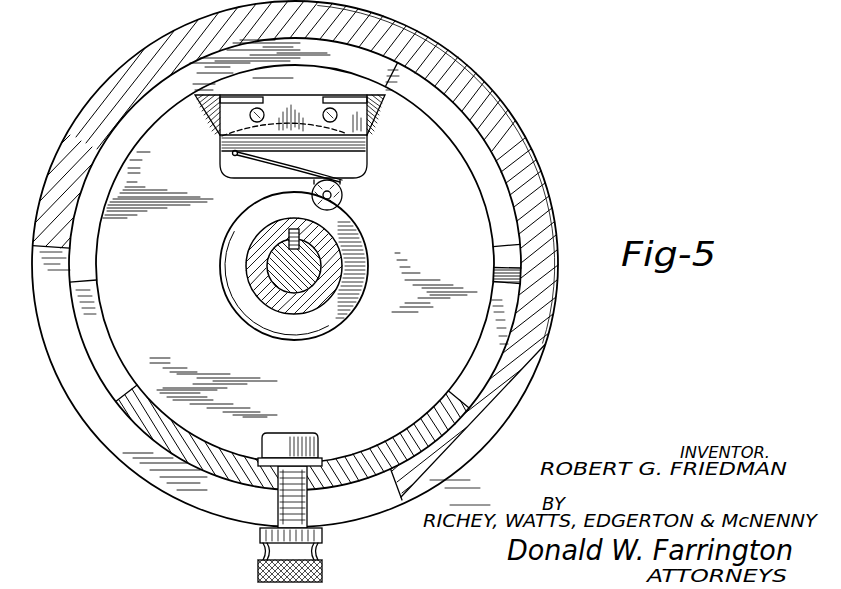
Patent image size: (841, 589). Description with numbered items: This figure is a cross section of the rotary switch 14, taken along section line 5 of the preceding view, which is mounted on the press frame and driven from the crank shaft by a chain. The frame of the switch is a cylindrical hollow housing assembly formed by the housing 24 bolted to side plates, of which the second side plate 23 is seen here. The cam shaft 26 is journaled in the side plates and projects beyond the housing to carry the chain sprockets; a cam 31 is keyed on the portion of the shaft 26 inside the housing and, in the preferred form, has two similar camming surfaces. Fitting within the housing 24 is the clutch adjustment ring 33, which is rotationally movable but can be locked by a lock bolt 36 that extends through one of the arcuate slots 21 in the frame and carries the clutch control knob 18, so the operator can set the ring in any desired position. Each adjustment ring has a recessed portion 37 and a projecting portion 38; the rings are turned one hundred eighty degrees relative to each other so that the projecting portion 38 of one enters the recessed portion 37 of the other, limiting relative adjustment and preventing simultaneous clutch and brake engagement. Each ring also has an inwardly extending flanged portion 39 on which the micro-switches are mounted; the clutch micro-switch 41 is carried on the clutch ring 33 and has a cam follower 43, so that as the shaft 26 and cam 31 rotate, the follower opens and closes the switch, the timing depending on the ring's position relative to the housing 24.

The section line 5 is at (415, 0).
The rotary switch 14 is at (553, 211).
The clutch control knob 18 is at (313, 553).
The arcuate slots 21 is at (370, 497).
The second side plate 23 is at (193, 417).
The housing 24 is at (527, 323).
The cam shaft 26 is at (283, 273).
The cam 31 is at (317, 317).
The clutch adjustment ring 33 is at (437, 420).
The lock bolt 36 is at (297, 435).
The recessed portion 37 is at (467, 140).
The projecting portion 38 is at (510, 262).
The inwardly extending flanged portion 39 is at (211, 98).
The clutch micro-switch 41 is at (343, 163).
The cam follower 43 is at (342, 198).